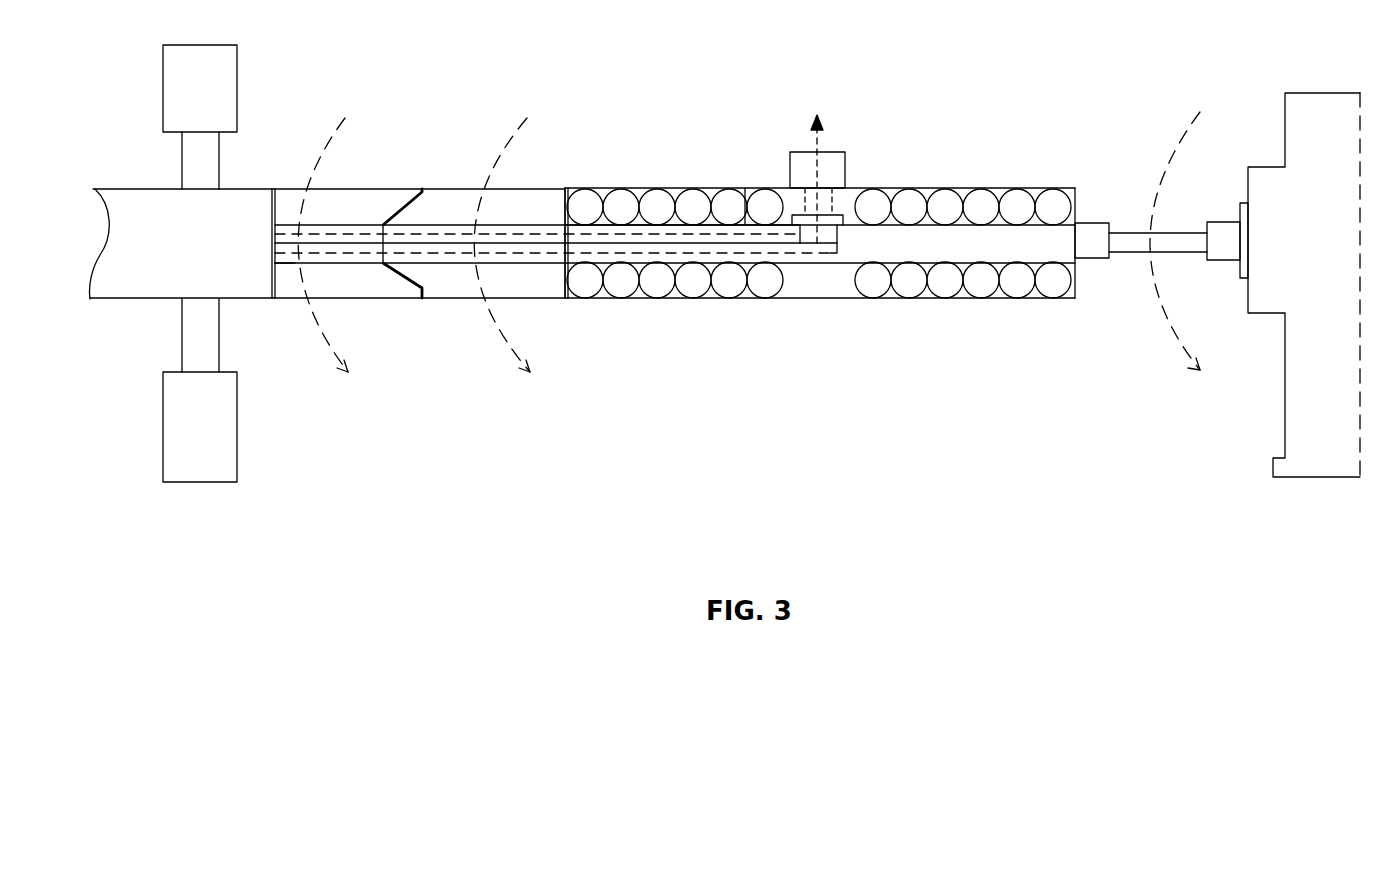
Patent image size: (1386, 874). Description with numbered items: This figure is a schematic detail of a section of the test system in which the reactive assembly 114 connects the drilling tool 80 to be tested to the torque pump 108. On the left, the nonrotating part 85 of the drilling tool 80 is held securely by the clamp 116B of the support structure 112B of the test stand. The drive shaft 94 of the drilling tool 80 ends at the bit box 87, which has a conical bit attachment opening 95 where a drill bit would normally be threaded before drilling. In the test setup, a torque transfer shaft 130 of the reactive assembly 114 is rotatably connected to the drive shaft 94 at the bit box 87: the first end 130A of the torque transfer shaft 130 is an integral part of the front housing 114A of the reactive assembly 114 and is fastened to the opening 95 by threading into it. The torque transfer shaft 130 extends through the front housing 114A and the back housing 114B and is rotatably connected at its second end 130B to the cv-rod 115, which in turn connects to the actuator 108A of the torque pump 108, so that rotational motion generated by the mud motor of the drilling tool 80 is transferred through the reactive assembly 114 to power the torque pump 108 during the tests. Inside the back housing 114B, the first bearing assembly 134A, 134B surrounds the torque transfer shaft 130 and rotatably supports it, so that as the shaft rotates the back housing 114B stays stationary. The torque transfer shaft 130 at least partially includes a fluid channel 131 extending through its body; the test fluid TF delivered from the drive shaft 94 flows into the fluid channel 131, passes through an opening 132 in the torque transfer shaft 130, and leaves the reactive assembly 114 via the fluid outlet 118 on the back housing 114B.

The drilling tool 80 is at (270, 160).
The nonrotating part 85 is at (160, 302).
The bit box 87 is at (350, 300).
The drive shaft 94 is at (290, 265).
The conical bit attachment opening 95 is at (368, 236).
The torque pump 108 is at (1350, 419).
The actuator 108A is at (1238, 268).
The support structure 112B is at (237, 433).
The reactive assembly 114 is at (682, 397).
The front housing 114A is at (518, 190).
The back housing 114B is at (745, 188).
The cv-rod 115 is at (1172, 227).
The clamp 116B is at (170, 170).
The fluid outlet 118 is at (848, 165).
The torque transfer shaft 130 is at (527, 270).
The first end of the torque transfer shaft 130A is at (401, 212).
The second end of the torque transfer shaft 130B is at (1063, 237).
The fluid channel 131 is at (438, 250).
The opening 132 is at (840, 232).
The first bearing assembly 134A is at (737, 308).
The first bearing assembly 134B is at (958, 175).
The test fluid TF is at (547, 197).